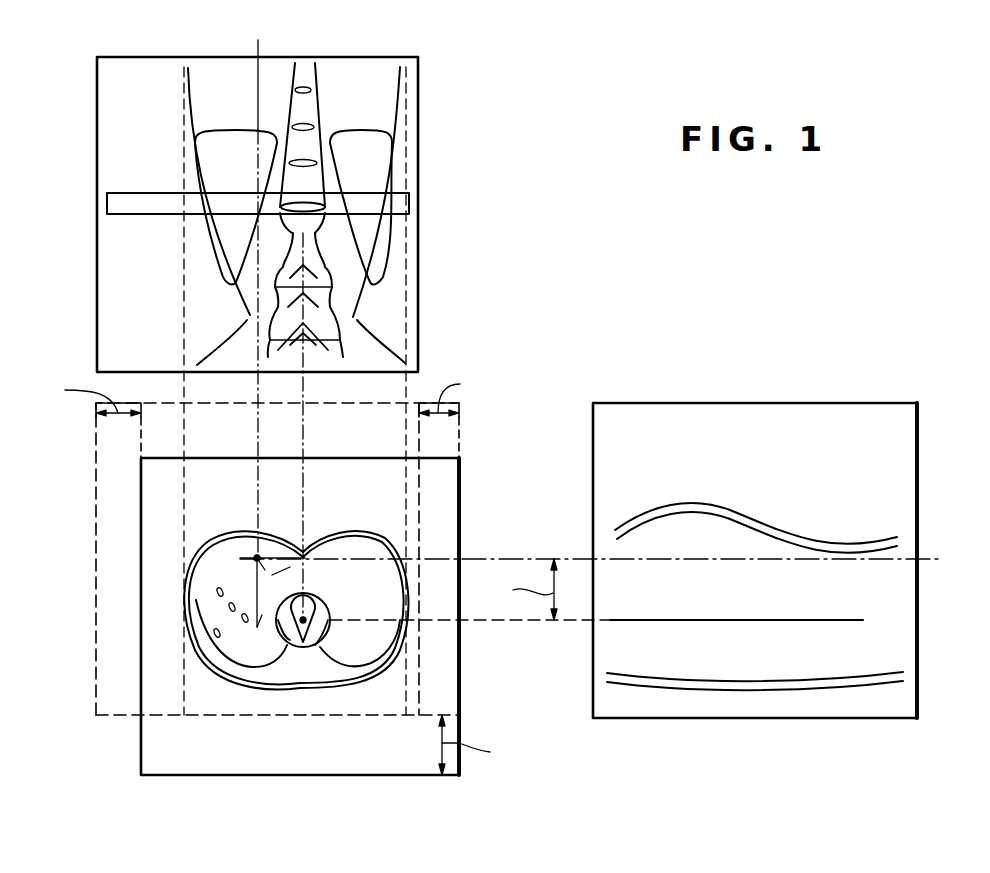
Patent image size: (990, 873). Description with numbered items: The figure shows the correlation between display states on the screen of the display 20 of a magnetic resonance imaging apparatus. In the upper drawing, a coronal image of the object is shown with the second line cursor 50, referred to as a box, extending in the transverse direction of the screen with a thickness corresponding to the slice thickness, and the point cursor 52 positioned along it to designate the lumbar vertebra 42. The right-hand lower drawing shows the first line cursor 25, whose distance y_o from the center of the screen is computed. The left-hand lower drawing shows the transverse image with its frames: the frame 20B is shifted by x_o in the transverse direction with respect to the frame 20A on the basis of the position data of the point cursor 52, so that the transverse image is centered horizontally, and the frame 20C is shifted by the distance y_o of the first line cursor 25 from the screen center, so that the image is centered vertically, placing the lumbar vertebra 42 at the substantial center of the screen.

The display 20 is at (97, 150).
The frame 20A is at (97, 578).
The frame 20B is at (460, 430).
The frame 20C is at (460, 675).
The first line cursor 25 is at (873, 622).
The lumbar vertebra 42 is at (308, 143).
The second line cursor 50 is at (133, 217).
The point cursor 52 is at (313, 205).